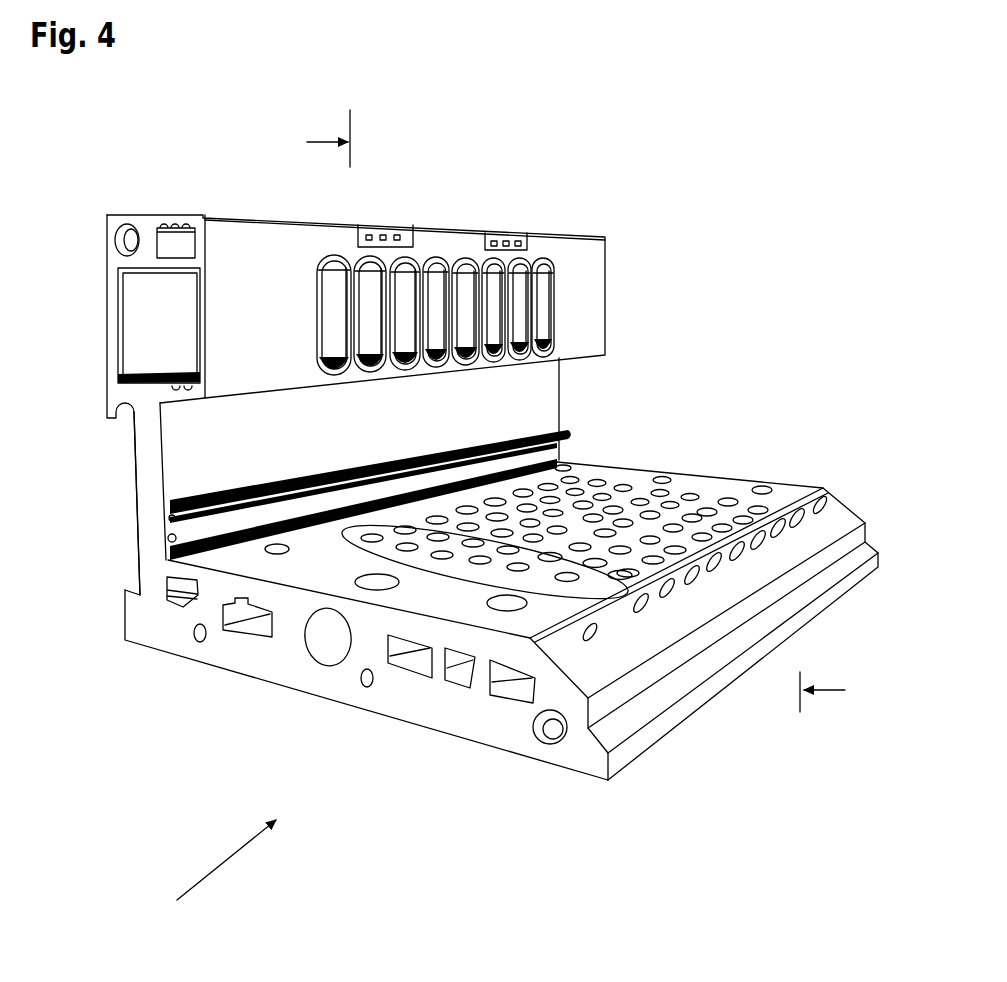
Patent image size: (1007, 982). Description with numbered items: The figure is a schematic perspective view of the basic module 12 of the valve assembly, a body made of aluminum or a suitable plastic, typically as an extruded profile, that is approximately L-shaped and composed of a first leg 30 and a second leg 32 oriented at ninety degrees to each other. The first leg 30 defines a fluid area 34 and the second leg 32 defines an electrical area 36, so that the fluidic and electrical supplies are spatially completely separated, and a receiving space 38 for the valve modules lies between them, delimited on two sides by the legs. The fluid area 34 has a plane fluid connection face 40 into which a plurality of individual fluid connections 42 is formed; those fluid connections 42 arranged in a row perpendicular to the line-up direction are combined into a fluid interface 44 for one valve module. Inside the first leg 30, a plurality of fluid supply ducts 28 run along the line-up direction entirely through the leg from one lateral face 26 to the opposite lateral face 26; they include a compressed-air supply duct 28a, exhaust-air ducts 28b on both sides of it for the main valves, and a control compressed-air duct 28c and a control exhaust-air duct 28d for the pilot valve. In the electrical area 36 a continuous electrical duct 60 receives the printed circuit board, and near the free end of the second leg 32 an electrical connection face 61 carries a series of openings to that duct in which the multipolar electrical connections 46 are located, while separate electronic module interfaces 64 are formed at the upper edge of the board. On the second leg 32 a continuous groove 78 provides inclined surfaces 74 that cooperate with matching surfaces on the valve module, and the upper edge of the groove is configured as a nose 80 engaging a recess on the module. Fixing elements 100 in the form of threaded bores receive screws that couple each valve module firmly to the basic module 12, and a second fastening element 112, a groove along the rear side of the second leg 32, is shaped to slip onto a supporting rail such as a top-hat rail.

The basic module 12 is at (144, 162).
The lateral face 26 is at (165, 637).
The fluid supply ducts 28 is at (200, 742).
The compressed-air supply duct 28a is at (325, 652).
The exhaust-air ducts 28b is at (245, 628).
The control compressed-air duct 28c is at (458, 695).
The control exhaust-air duct 28d is at (512, 733).
The first leg 30 is at (580, 765).
The second leg 32 is at (108, 288).
The fluid area 34 is at (738, 432).
The electrical area 36 is at (580, 248).
The receiving space 38 is at (660, 357).
The fluid connection face 40 is at (730, 488).
The fluid connections 42 is at (634, 486).
The fluid interface 44 is at (640, 602).
The electrical connection 46 is at (330, 300).
The electrical duct 60 is at (150, 340).
The electrical connection face 61 is at (592, 292).
The electronic module interfaces 64 is at (506, 240).
The inclined surfaces 74 is at (170, 540).
The groove 78 is at (560, 446).
The nose 80 is at (168, 522).
The fixing elements 100 is at (766, 546).
The second fastening element 112 is at (134, 497).